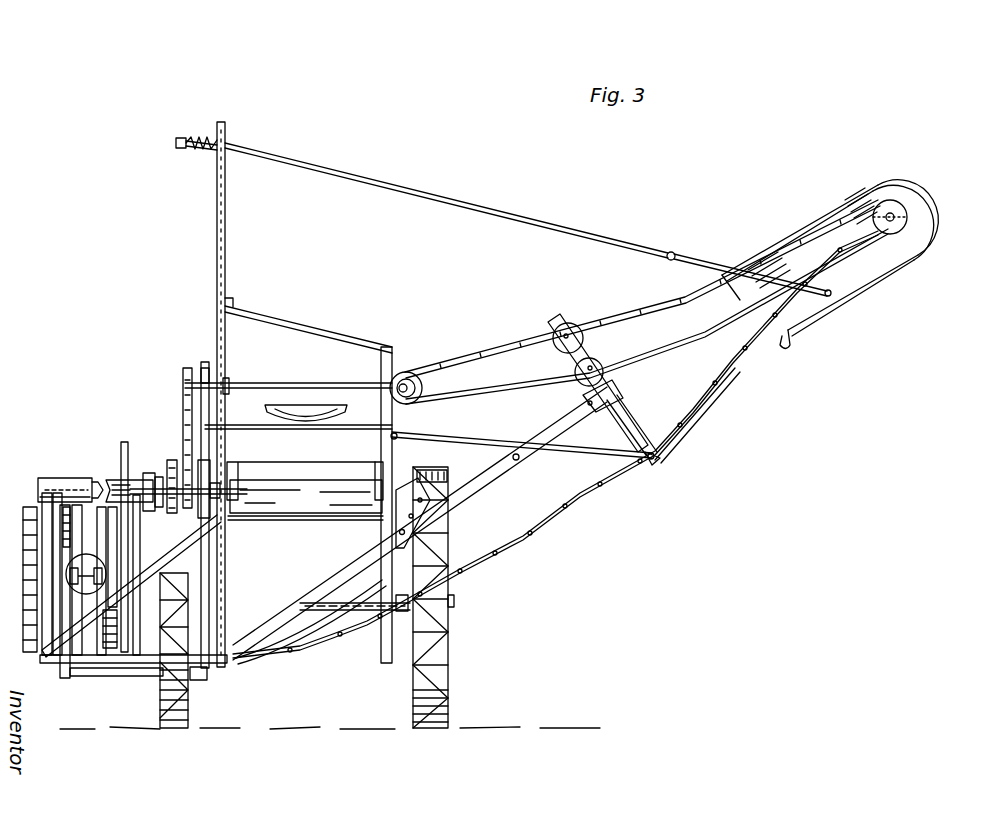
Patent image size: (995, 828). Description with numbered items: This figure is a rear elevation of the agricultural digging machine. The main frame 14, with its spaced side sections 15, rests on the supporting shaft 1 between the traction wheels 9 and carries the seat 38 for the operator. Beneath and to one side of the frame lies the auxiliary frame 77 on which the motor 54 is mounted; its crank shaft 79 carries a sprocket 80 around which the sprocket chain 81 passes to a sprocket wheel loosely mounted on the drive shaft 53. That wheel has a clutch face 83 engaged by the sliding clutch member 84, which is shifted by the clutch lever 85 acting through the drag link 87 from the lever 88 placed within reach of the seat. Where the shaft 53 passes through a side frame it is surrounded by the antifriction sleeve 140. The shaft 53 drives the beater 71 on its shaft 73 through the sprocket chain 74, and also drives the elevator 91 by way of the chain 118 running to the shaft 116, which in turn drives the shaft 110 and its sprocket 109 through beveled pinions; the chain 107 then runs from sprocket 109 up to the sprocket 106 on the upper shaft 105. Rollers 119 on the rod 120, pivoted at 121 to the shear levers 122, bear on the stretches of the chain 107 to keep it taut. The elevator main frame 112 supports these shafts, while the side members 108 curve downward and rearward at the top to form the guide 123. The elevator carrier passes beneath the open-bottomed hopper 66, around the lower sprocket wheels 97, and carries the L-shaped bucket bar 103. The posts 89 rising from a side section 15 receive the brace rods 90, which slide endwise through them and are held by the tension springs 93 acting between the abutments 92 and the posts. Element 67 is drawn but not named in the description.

The supporting shaft 1 is at (345, 610).
The traction wheels 9 is at (448, 692).
The main frame 14 is at (397, 480).
The side sections 15 is at (237, 465).
The seat 38 is at (305, 405).
The supporting shaft 53 is at (148, 470).
The motor 54 is at (88, 645).
The hopper 66 is at (355, 589).
The vertical bar 67 is at (152, 475).
The beater 71 is at (312, 513).
The shaft 73 is at (200, 542).
The sprocket chain 74 is at (171, 460).
The auxiliary frame 77 is at (133, 665).
The crank shaft 79 is at (84, 560).
The sprocket 80 is at (123, 629).
The sprocket chain 81 is at (188, 508).
The clutch face 83 is at (113, 482).
The sliding clutch member 84 is at (80, 480).
The clutch lever 85 is at (60, 613).
The drag link 87 is at (108, 677).
The lever 88 is at (210, 675).
The posts 89 is at (217, 240).
The brace rods 90 is at (450, 200).
The elevator 91 is at (518, 432).
The abutments 92 is at (192, 136).
The tension springs 93 is at (202, 152).
The sprocket wheels 97 is at (262, 645).
The bucket bar 103 is at (318, 645).
The shaft 105 is at (907, 216).
The sprocket 106 is at (893, 210).
The chain 107 is at (618, 326).
The side members 108 is at (815, 248).
The sprocket 109 is at (418, 374).
The shaft 110 is at (421, 386).
The main frame 112 is at (398, 418).
The shaft 116 is at (270, 381).
The chain 118 is at (212, 418).
The sprocket 119 is at (568, 324).
The rod 120 is at (637, 396).
The pivot 121 is at (656, 461).
The shear levers 122 is at (722, 372).
The guide 123 is at (890, 258).
The sleeve 140 is at (516, 462).